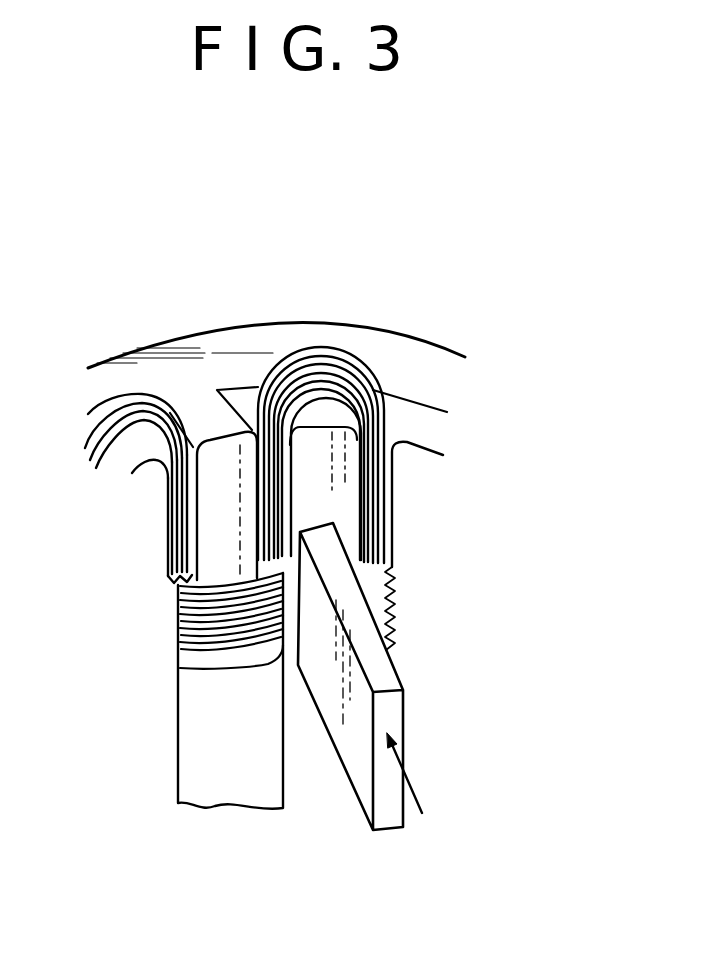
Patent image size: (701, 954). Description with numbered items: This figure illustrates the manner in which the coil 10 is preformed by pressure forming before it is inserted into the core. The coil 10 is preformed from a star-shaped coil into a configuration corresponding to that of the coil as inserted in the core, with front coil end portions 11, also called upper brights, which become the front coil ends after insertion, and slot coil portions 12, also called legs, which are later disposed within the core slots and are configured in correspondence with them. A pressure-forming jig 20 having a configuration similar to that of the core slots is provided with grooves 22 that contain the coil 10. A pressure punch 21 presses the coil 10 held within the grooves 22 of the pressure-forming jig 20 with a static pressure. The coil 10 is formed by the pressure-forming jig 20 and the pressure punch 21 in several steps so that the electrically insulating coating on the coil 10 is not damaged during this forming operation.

The coil 10 is at (100, 412).
The front coil end portions 11 is at (210, 650).
The slot coil portions 12 is at (169, 541).
The pressure-forming jig 20 is at (163, 342).
The pressure punch 21 is at (389, 676).
The grooves 22 is at (392, 527).